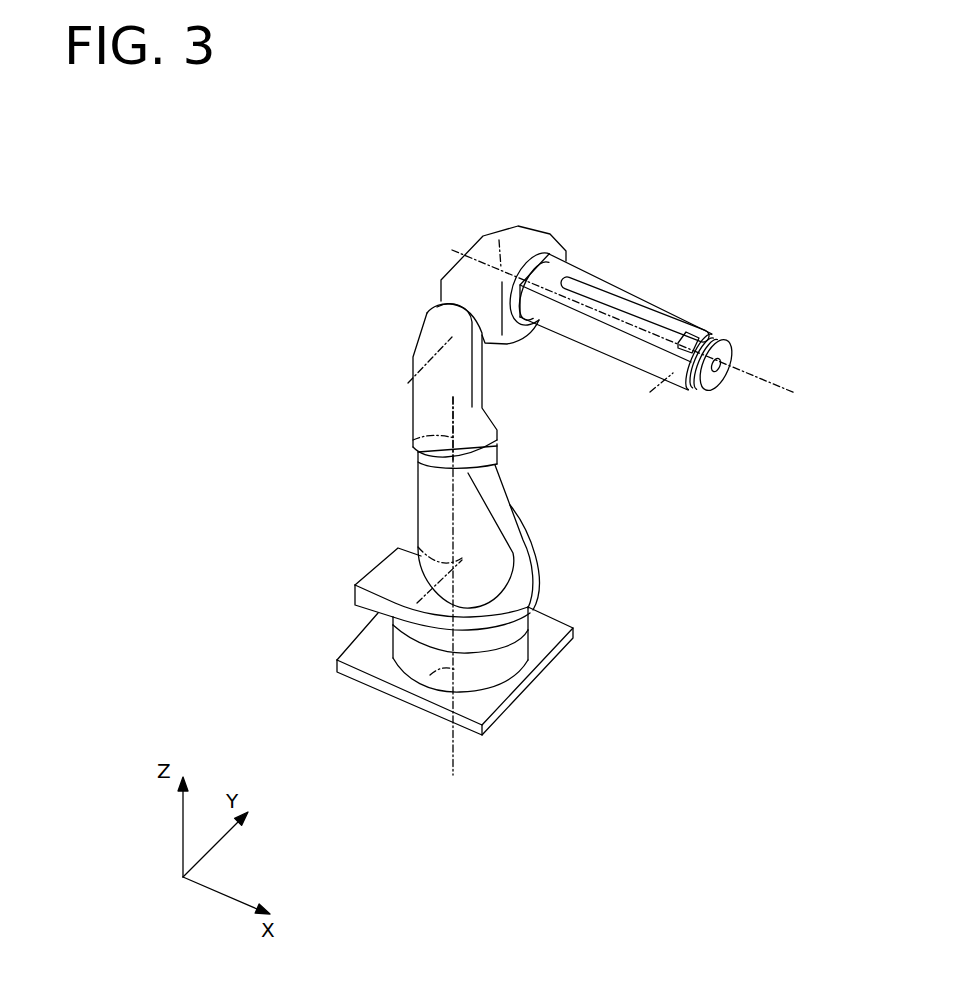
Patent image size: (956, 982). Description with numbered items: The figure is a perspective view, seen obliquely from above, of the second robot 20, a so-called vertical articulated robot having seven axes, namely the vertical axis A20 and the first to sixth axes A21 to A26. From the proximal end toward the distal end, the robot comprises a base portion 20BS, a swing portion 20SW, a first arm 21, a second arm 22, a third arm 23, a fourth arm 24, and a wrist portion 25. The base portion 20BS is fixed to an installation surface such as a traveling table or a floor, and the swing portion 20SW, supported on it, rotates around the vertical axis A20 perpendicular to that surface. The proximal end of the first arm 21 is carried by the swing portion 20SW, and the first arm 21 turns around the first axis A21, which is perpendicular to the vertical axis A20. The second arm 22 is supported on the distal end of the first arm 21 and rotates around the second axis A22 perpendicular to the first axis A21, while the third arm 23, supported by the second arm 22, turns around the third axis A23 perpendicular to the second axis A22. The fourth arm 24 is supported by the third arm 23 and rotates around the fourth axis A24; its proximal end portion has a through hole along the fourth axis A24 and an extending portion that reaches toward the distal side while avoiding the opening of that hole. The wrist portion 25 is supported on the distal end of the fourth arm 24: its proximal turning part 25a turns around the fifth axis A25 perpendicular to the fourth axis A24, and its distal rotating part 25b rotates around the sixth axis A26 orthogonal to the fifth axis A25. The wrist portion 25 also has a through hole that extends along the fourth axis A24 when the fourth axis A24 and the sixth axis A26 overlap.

The second robot 20 is at (383, 177).
The base portion 20BS is at (508, 659).
The swing portion 20SW is at (388, 573).
The first arm 21 is at (467, 510).
The second arm 22 is at (453, 377).
The third arm 23 is at (458, 272).
The fourth arm 24 is at (567, 270).
The wrist portion 25 is at (770, 277).
The turning part 25a is at (697, 333).
The rotating part 25b is at (730, 345).
The vertical axis A20 is at (442, 670).
The first axis A21 is at (420, 550).
The second axis A22 is at (413, 440).
The third axis A23 is at (430, 345).
The fourth axis A24 is at (500, 267).
The fifth axis A25 is at (663, 380).
The sixth axis A26 is at (783, 387).